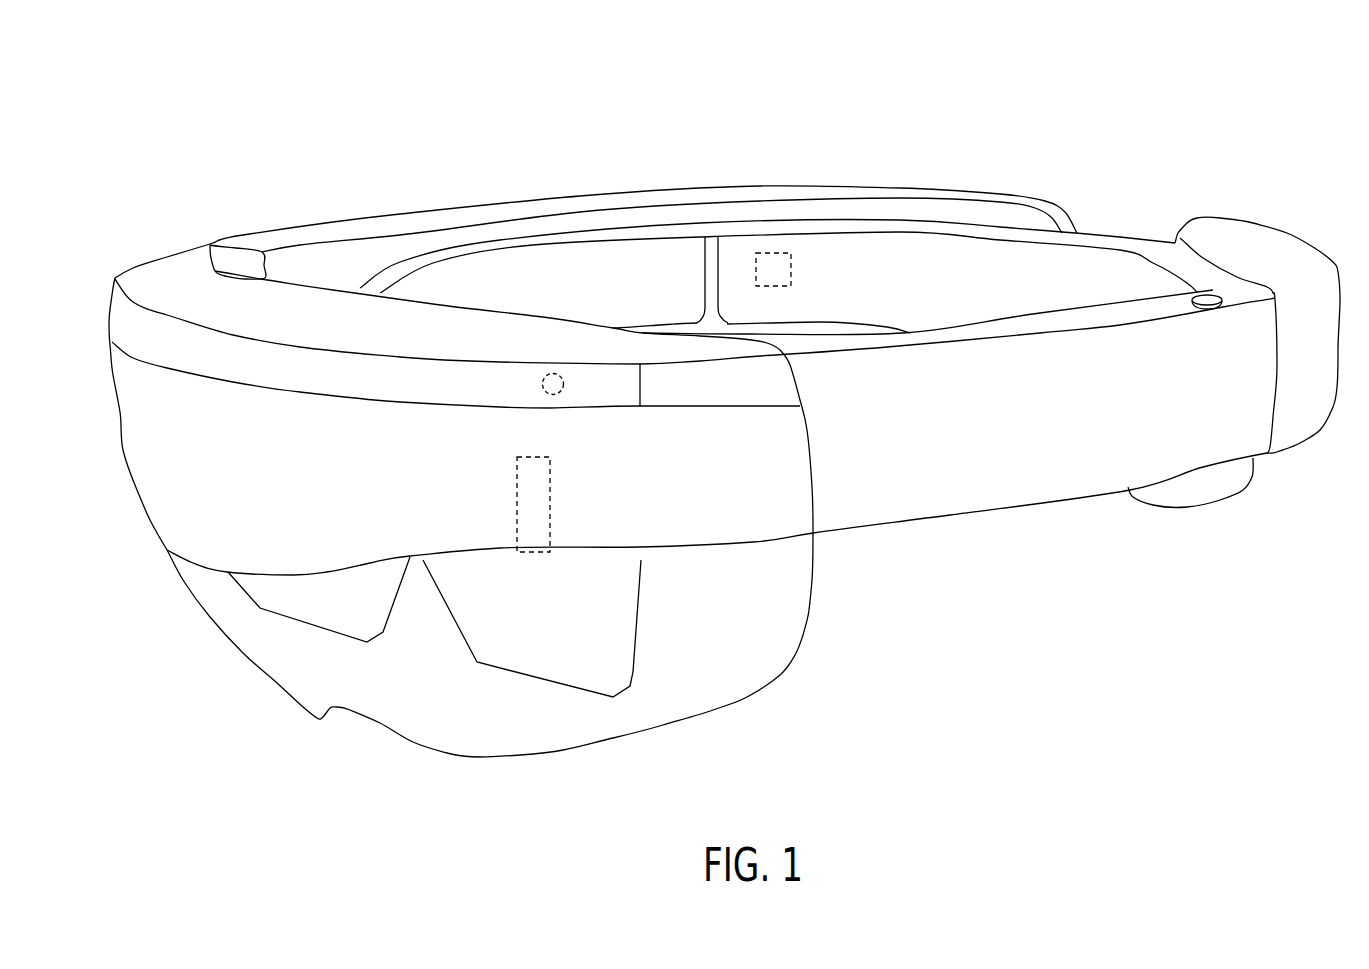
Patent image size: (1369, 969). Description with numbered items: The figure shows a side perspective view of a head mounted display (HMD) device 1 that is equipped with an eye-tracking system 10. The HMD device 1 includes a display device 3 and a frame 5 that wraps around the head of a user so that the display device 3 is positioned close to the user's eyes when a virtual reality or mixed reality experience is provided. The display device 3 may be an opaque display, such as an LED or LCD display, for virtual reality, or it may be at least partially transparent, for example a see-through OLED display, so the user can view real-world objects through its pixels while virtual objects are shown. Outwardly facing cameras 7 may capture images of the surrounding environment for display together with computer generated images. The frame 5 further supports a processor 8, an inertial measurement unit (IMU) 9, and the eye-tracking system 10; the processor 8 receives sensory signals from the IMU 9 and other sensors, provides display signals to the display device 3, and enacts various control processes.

The head mounted display (HMD) device 1 is at (122, 100).
The display device 3 is at (356, 768).
The frame 5 is at (891, 503).
The outwardly facing cameras 7 is at (552, 396).
The processor 8 is at (334, 326).
The inertial measurement unit (IMU) 9 is at (776, 253).
The eye-tracking system 10 is at (551, 492).